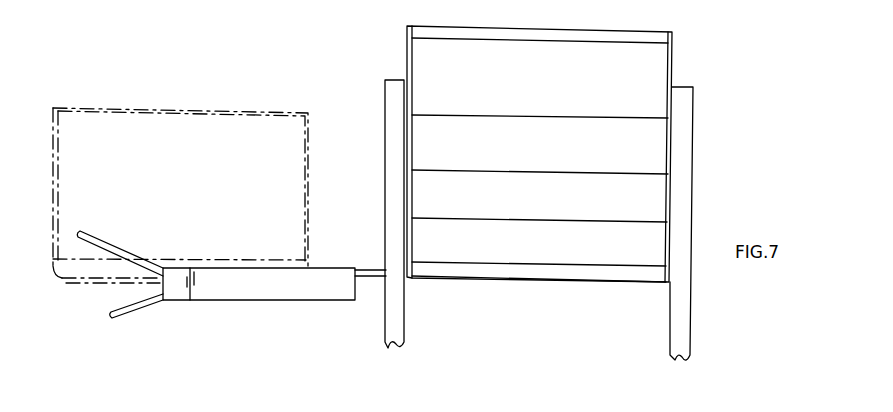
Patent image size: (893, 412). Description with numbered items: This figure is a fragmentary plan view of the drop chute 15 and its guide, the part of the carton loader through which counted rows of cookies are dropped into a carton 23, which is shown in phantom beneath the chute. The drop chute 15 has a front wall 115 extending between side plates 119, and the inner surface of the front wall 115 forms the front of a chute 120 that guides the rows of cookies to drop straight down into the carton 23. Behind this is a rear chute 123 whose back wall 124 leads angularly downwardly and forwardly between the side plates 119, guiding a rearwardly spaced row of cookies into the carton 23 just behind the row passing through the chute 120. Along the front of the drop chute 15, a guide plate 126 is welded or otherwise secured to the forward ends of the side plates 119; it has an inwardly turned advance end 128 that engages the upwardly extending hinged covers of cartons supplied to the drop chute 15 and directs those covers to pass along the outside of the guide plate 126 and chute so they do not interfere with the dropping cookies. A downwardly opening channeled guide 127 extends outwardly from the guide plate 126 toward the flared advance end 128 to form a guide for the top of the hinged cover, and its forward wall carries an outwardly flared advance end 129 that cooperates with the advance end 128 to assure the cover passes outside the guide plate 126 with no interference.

The drop chute 15 is at (543, 176).
The carton 23 is at (236, 110).
The front wall 115 is at (575, 246).
The side plates 119 is at (403, 73).
The chute 120 is at (497, 250).
The rear chute 123 is at (654, 146).
The back wall 124 is at (628, 66).
The guide plate 126 is at (370, 279).
The channeled guide 127 is at (283, 300).
The advance end 128 is at (130, 252).
The outwardly flared advance end 129 is at (143, 314).